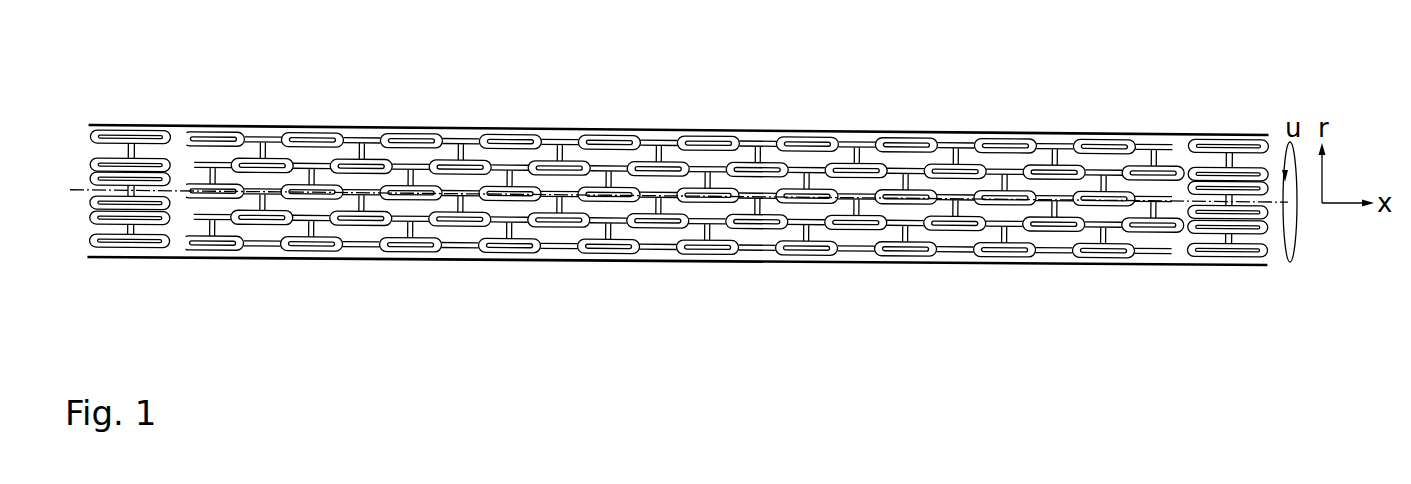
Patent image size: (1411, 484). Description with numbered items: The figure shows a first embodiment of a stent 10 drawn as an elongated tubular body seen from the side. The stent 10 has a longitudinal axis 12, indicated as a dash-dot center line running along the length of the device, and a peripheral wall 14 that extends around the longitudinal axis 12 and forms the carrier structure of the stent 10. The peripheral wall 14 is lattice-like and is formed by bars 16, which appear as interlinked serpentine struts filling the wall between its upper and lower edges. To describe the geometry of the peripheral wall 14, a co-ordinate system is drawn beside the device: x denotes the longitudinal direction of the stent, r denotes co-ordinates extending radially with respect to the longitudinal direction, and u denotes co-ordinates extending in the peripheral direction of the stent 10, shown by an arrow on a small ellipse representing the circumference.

The stent 10 is at (679, 198).
The longitudinal axis 12 is at (78, 188).
The peripheral wall 14 is at (202, 120).
The bars 16 is at (380, 143).